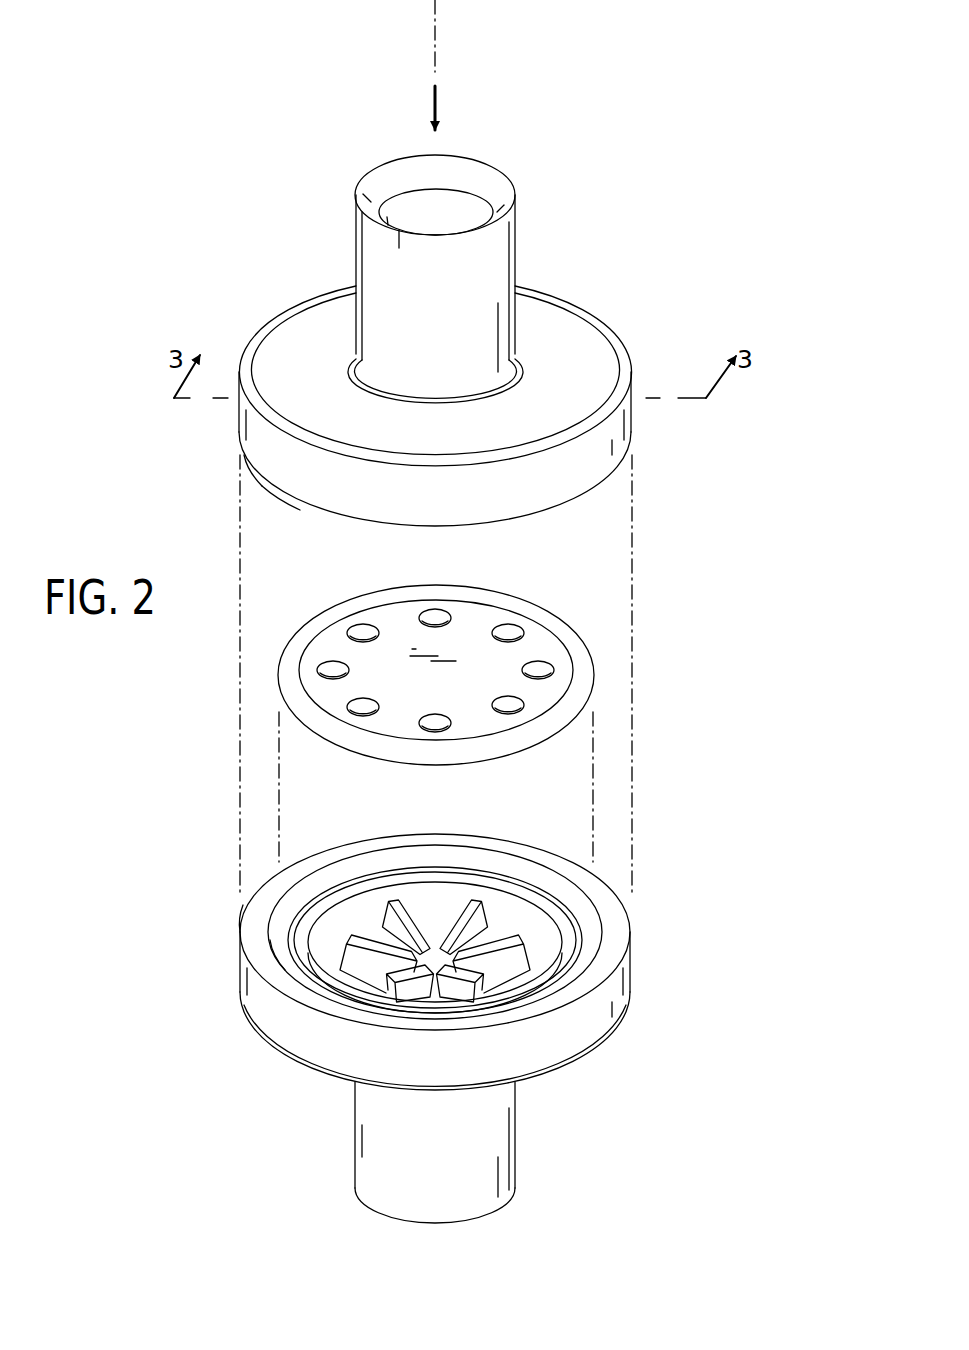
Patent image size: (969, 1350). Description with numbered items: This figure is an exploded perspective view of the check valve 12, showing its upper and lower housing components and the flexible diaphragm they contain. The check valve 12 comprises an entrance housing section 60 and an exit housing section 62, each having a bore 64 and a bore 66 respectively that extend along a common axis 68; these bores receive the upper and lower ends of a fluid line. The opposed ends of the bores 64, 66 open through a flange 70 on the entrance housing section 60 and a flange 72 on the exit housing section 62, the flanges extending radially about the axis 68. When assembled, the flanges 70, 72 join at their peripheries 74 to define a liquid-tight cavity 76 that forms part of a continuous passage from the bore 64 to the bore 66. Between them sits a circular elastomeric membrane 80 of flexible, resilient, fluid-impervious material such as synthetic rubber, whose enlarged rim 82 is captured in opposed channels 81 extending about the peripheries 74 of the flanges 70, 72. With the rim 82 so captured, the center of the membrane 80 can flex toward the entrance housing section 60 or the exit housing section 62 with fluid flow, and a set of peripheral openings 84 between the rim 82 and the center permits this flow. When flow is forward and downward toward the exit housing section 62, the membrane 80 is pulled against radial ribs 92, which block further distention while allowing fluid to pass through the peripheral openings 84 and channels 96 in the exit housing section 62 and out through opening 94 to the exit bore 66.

The check valve 12 is at (568, 140).
The entrance housing section 60 is at (497, 250).
The exit housing section 62 is at (490, 1140).
The bore 64 is at (468, 140).
The bore 66 is at (478, 1232).
The common axis 68 is at (440, 37).
The flange 70 is at (620, 422).
The flange 72 is at (618, 980).
The peripheries 74 is at (270, 494).
The liquid-tight cavity 76 is at (455, 685).
The elastomeric membrane 80 is at (540, 670).
The channels 81 is at (250, 465).
The enlarged rim 82 is at (583, 700).
The peripheral openings 84 is at (510, 633).
The radial ribs 92 is at (461, 990).
The opening 94 is at (434, 983).
The channels 96 is at (362, 905).